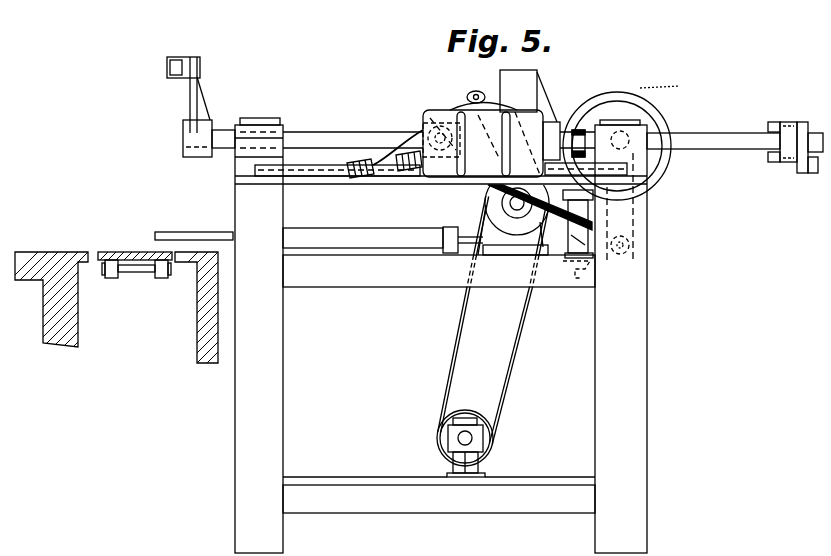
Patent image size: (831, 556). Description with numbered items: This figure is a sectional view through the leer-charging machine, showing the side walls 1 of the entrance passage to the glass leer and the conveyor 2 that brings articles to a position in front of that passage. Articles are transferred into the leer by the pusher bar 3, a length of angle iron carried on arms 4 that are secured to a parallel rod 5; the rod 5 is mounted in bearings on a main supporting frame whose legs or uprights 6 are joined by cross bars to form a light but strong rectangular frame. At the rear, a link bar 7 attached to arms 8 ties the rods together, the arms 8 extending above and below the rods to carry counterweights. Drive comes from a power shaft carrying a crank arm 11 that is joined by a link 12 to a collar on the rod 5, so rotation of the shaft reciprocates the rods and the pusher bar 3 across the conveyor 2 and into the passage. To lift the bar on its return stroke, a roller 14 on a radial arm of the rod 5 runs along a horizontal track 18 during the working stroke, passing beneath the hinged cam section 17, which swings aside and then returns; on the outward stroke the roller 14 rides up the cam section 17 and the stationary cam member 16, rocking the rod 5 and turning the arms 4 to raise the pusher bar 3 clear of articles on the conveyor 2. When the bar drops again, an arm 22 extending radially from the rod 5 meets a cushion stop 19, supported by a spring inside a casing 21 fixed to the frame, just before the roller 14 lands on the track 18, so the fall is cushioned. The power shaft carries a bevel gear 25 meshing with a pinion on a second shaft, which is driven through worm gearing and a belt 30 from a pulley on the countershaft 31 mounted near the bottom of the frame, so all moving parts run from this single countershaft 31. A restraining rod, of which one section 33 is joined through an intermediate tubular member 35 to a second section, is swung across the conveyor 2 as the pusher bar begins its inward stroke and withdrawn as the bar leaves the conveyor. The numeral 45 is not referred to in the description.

The side walls of the entrance passage 1 is at (77, 323).
The conveyor 2 is at (137, 242).
The pusher bar 3 is at (167, 78).
The arms 4 is at (186, 107).
The rod 5 is at (732, 149).
The legs or uprights 6 is at (283, 423).
The link bar 7 is at (805, 173).
The arms 8 is at (785, 122).
The crank arm 11 is at (600, 211).
The link 12 is at (522, 188).
The roller 14 is at (488, 86).
The stationary cam member 16 is at (472, 120).
The swinging cam section 17 is at (392, 168).
The horizontal track 18 is at (320, 176).
The cushion stop 19 is at (583, 158).
The casing 21 is at (578, 224).
The arm 22 is at (577, 130).
The bevel gear 25 is at (661, 118).
The belt 30 is at (523, 343).
The countershaft 31 is at (465, 438).
The restraining rod section 33 is at (186, 237).
The tubular member 35 is at (385, 240).
The reference numeral 45 is at (712, 555).